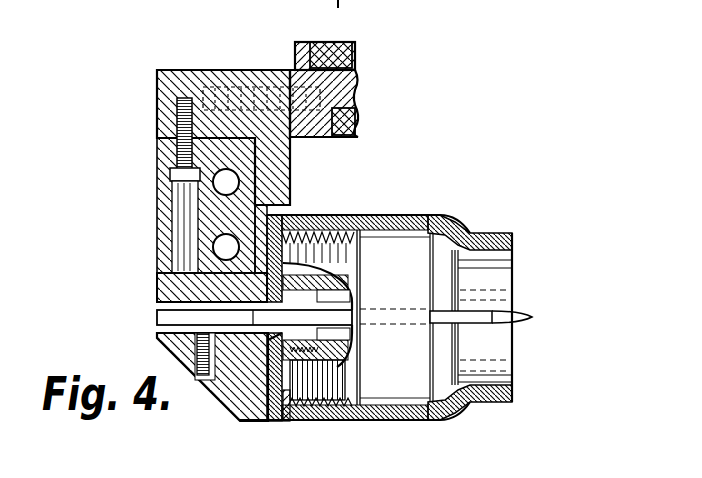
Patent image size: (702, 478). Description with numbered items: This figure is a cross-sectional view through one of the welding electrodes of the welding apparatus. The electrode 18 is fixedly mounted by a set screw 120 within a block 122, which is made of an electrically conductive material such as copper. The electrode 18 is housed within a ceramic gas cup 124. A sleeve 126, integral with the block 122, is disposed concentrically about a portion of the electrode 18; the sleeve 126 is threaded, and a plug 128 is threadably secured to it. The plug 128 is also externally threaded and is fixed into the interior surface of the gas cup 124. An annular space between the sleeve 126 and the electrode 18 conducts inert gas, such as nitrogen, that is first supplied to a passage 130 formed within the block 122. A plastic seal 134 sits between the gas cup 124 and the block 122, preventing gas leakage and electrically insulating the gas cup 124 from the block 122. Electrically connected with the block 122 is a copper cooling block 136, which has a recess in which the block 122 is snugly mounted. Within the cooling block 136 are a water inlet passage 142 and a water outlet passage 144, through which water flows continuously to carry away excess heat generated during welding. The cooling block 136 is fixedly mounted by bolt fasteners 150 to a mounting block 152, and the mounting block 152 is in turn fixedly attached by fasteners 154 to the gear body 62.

The electrode 18 is at (533, 317).
The gear body 62 is at (358, 86).
The set screw 120 is at (195, 348).
The block 122 is at (172, 285).
The ceramic gas cup 124 is at (480, 233).
The sleeve 126 is at (317, 423).
The plug 128 is at (360, 215).
The passage 130 is at (222, 410).
The plastic seal 134 is at (283, 425).
The cooling block 136 is at (157, 156).
The water inlet passage 142 is at (240, 180).
The water outlet passage 144 is at (213, 247).
The bolt fasteners 150 is at (157, 96).
The mounting block 152 is at (225, 70).
The fasteners 154 is at (268, 70).